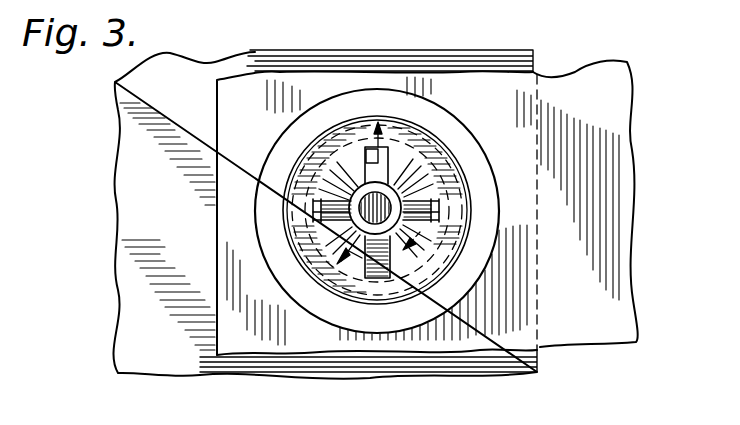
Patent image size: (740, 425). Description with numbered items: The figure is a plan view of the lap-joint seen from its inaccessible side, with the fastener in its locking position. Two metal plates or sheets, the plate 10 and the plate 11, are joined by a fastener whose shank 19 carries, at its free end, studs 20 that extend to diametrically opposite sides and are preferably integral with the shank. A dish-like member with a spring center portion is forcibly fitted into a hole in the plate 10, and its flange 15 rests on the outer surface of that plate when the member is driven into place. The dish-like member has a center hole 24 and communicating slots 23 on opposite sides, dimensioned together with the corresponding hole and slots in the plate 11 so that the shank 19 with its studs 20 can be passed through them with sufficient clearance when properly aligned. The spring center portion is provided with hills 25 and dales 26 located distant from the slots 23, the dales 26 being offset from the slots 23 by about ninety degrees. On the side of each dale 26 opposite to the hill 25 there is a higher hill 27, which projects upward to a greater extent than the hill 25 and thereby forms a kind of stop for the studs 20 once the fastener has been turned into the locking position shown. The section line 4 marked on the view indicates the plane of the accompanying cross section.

The section line 4— 4 is at (371, 206).
The plate 10 is at (225, 259).
The plate 11 is at (122, 155).
The flange 15 is at (484, 199).
The shank 19 is at (400, 197).
The studs 20 is at (496, 217).
The slots 23 is at (385, 187).
The center hole 24 is at (380, 158).
The hills 25 is at (318, 177).
The dales 26 is at (440, 212).
The hill 27 is at (437, 187).